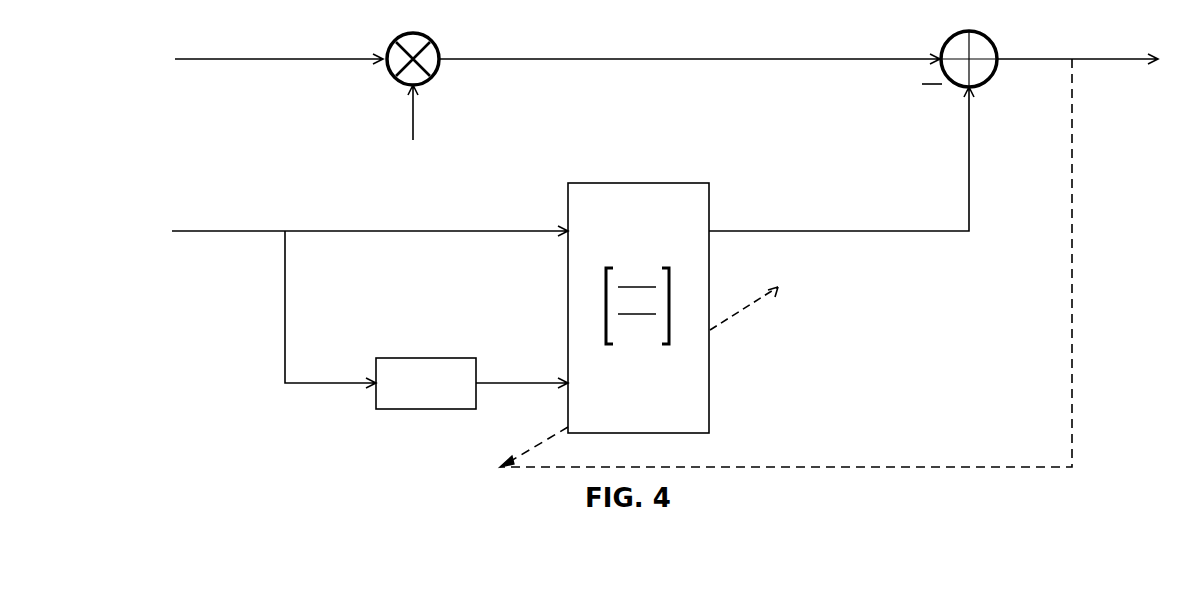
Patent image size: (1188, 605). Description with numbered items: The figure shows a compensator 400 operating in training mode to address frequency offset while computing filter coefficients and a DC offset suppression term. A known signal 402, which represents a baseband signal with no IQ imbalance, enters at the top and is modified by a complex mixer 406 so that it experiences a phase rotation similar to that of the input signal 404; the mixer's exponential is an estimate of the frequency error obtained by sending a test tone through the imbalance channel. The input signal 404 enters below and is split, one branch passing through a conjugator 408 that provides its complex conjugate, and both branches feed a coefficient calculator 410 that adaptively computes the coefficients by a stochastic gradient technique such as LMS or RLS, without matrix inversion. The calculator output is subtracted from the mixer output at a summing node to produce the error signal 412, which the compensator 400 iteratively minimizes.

The compensator 400 is at (1160, 299).
The known signal 402 is at (213, 60).
The input signal 404 is at (172, 231).
The complex mixer 406 is at (438, 68).
The conjugator 408 is at (383, 409).
The coefficient calculator 410 is at (709, 374).
The error signal 412 is at (1020, 62).